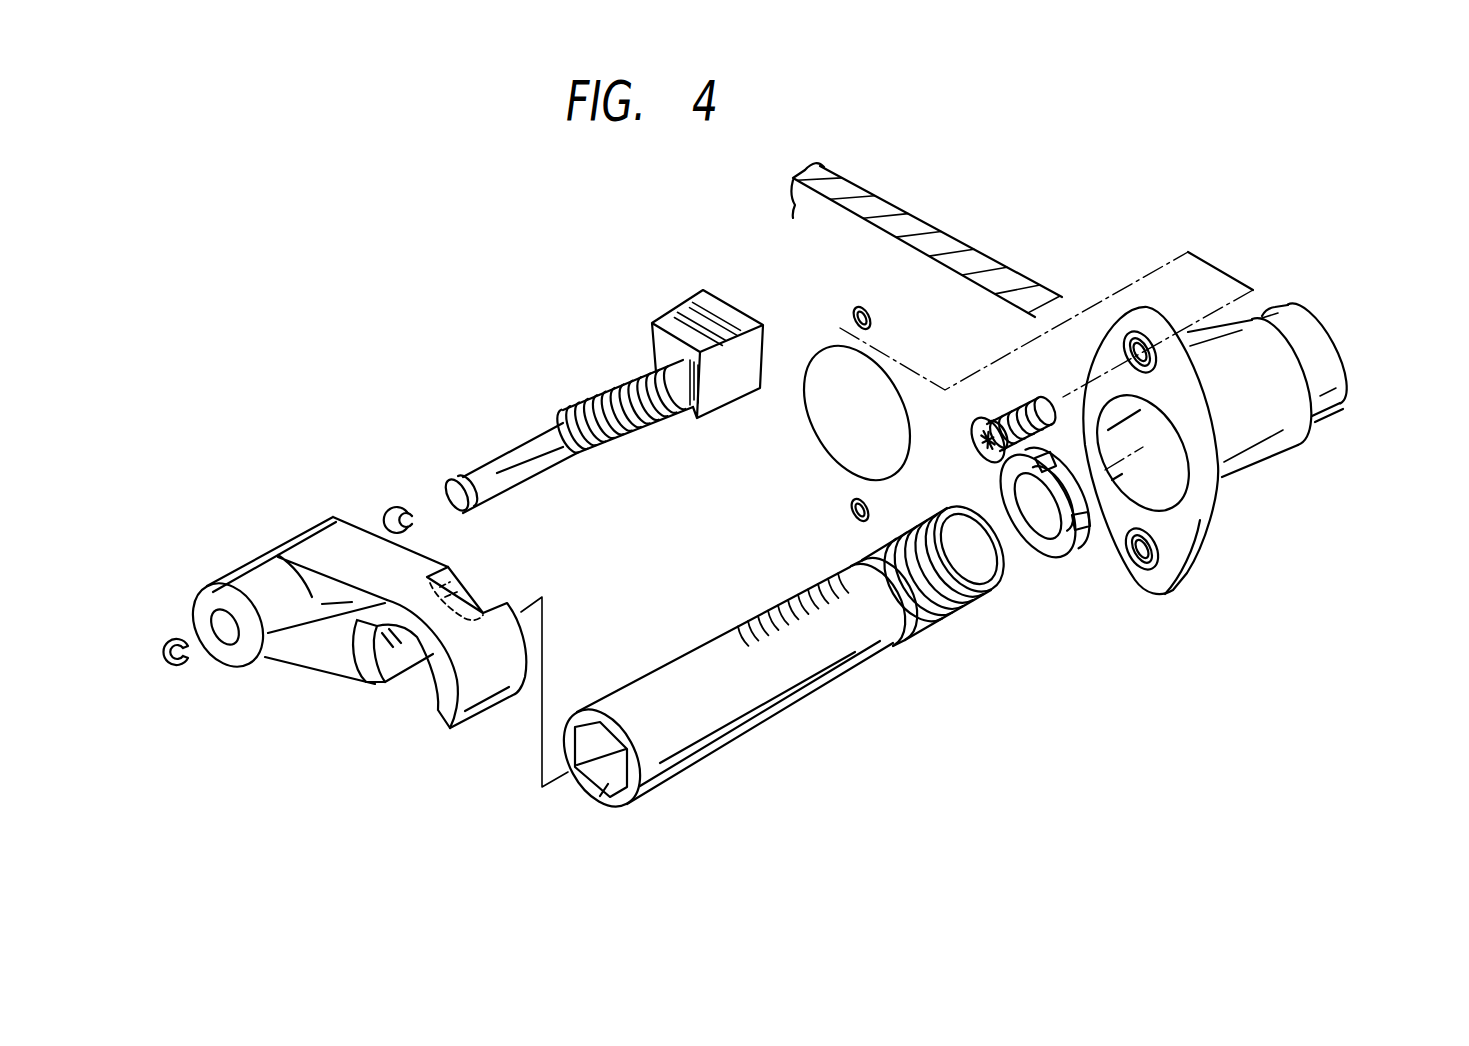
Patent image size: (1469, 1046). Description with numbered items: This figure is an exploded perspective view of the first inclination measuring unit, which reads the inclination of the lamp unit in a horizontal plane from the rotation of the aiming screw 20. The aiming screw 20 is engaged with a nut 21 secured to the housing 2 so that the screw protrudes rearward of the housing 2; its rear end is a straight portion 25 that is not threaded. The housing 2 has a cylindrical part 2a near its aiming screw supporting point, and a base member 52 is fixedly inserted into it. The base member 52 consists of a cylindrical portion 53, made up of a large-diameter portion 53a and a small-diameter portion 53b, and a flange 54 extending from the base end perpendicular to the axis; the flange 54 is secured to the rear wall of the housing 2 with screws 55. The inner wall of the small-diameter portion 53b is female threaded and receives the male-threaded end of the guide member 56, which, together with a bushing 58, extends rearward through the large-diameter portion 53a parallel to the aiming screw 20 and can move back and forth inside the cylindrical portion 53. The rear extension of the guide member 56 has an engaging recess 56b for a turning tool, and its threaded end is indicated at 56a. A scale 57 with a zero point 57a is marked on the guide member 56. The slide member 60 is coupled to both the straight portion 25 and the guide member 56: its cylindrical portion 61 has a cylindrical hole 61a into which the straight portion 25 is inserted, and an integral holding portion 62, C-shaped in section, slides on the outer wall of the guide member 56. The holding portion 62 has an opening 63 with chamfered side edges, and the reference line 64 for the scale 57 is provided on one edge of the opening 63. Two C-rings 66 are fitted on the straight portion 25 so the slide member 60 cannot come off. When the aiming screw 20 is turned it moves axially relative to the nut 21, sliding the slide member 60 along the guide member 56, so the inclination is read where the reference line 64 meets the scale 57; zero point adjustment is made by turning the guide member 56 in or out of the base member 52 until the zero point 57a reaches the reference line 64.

The housing 2 is at (1017, 343).
The cylindrical part 2a is at (837, 380).
The aiming screw 20 is at (598, 378).
The nut 21 is at (663, 321).
The straight portion 25 is at (500, 450).
The base member 52 is at (1258, 471).
The cylindrical portion 53 is at (1313, 421).
The large-diameter portion 53a is at (1283, 450).
The small-diameter portion 53b is at (1335, 418).
The flange 54 is at (1156, 594).
The screws 55 is at (975, 458).
The guide member 56 is at (785, 682).
The threaded neck 56a is at (977, 608).
The engaging recess 56b is at (590, 797).
The scale 57 is at (750, 620).
The zero point 57a is at (777, 600).
The bushing 58 is at (1060, 558).
The slide member 60 is at (338, 604).
The cylindrical portion 61 is at (202, 586).
The cylindrical hole 61a is at (208, 625).
The holding portion 62 is at (484, 702).
The opening 63 is at (477, 597).
The reference line 64 is at (452, 571).
The C-rings 66 is at (414, 507).